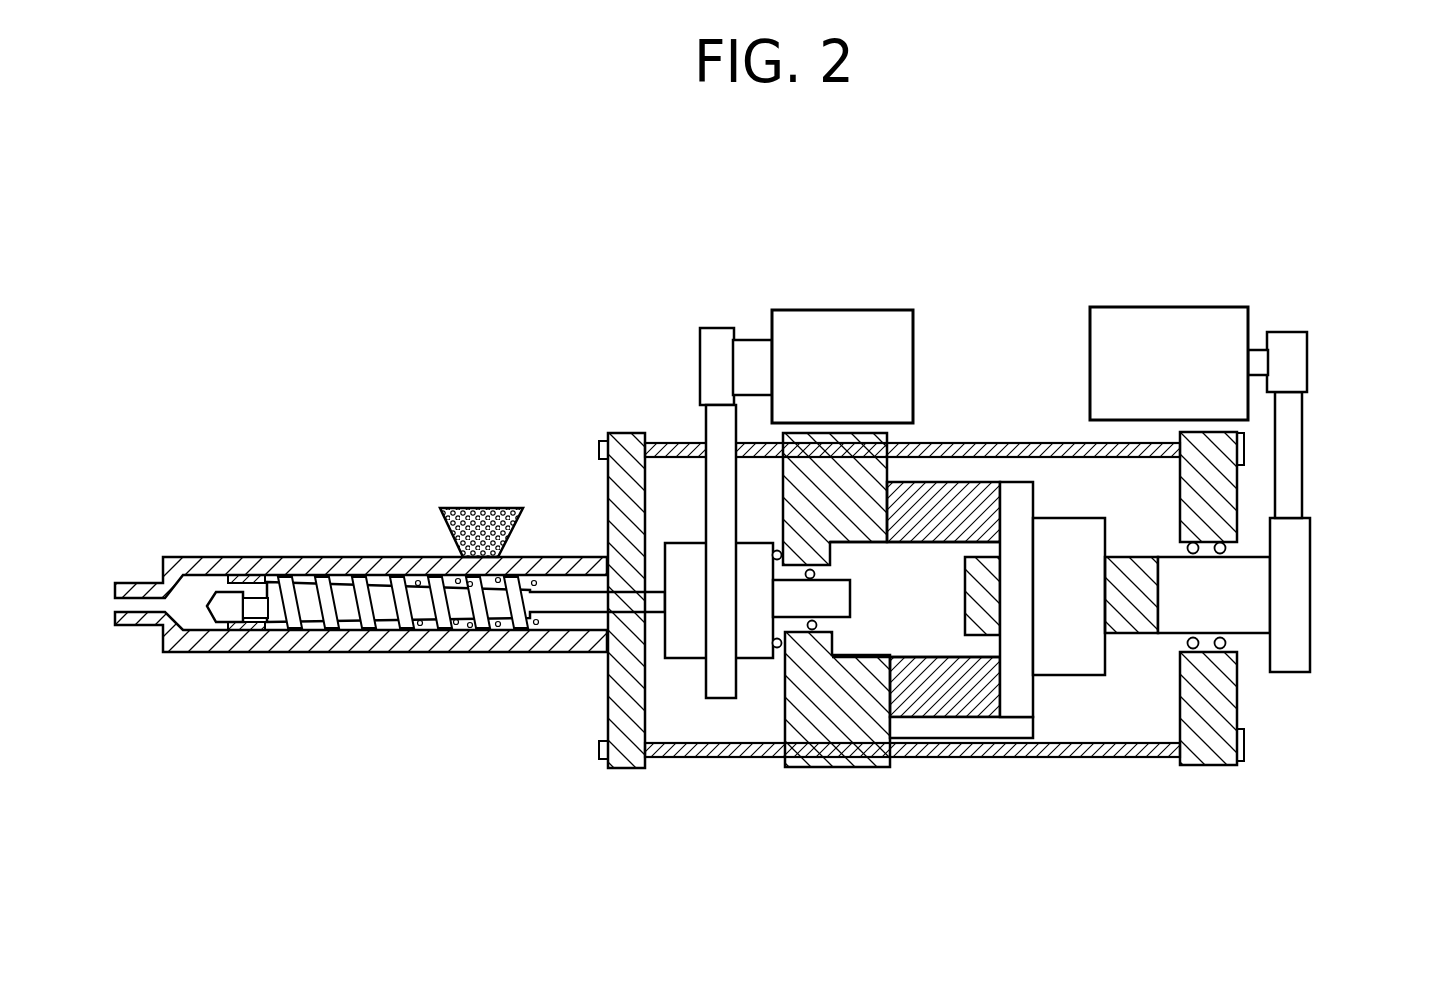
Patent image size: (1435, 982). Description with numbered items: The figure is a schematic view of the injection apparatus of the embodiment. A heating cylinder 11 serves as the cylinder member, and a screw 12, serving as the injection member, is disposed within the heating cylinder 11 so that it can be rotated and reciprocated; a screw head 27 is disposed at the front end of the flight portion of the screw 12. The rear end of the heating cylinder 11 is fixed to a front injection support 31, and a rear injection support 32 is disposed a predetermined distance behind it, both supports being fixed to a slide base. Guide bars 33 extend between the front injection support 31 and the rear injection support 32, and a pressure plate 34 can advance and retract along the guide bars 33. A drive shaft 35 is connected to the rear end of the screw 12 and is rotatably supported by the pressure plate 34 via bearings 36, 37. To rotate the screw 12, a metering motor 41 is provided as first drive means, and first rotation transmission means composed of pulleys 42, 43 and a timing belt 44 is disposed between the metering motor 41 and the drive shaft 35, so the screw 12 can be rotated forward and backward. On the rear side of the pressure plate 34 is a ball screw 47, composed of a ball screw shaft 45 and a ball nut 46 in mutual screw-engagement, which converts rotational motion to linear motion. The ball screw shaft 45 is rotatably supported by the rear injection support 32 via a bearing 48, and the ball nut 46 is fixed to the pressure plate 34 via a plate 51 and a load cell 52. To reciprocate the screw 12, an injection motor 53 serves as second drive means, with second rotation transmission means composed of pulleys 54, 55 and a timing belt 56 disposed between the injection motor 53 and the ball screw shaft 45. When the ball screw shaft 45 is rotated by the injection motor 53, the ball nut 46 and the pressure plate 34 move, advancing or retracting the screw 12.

The heating cylinder 11 is at (368, 557).
The screw 12 is at (340, 630).
The screw head 27 is at (214, 598).
The front injection support 31 is at (606, 700).
The rear injection support 32 is at (1226, 766).
The guide bars 33 is at (998, 443).
The pressure plate 34 is at (810, 498).
The drive shaft 35 is at (653, 595).
The bearing 36 is at (815, 574).
The bearing 37 is at (777, 648).
The metering motor 41 is at (839, 317).
The pulley 42 is at (717, 335).
The pulley 43 is at (718, 690).
The timing belt 44 is at (712, 425).
The ball screw shaft 45 is at (1128, 633).
The ball nut 46 is at (1063, 668).
The ball screw 47 is at (1055, 833).
The bearing 48 is at (1226, 643).
The plate 51 is at (1023, 490).
The load cell 52 is at (945, 720).
The injection motor 53 is at (1152, 317).
The pulley 54 is at (1300, 370).
The pulley 55 is at (1300, 590).
The timing belt 56 is at (1295, 482).